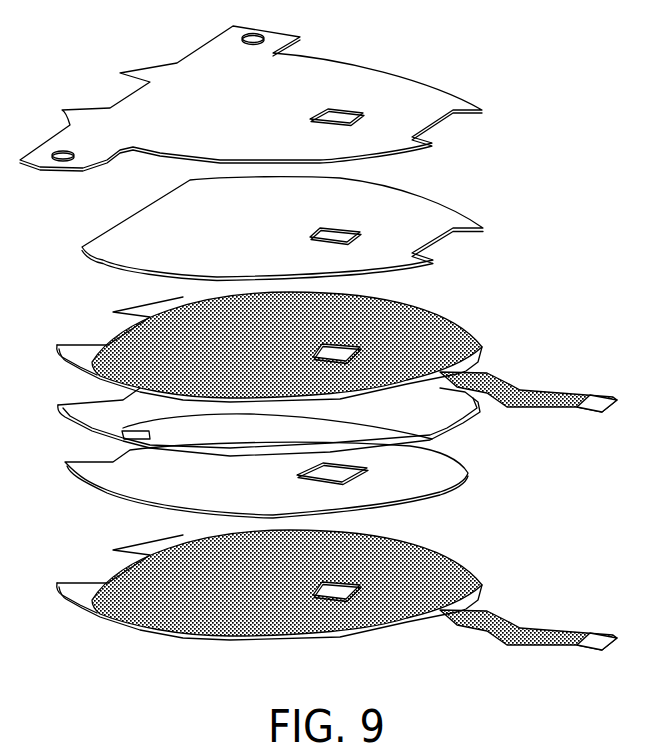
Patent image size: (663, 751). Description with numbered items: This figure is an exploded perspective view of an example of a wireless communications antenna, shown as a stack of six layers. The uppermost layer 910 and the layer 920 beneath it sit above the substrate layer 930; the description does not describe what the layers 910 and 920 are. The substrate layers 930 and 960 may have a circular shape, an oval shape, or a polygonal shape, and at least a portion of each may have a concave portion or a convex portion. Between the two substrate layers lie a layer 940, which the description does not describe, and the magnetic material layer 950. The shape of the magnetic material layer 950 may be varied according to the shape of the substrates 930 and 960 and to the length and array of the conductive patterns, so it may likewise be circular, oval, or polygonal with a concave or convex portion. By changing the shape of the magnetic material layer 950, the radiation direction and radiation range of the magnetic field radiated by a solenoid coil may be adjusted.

The bracket plate 910 is at (462, 92).
The plate 920 is at (462, 210).
The substrate layer 930 is at (483, 342).
The ring spacer 940 is at (483, 415).
The magnetic material layer 950 is at (460, 465).
The substrate layer 960 is at (480, 590).